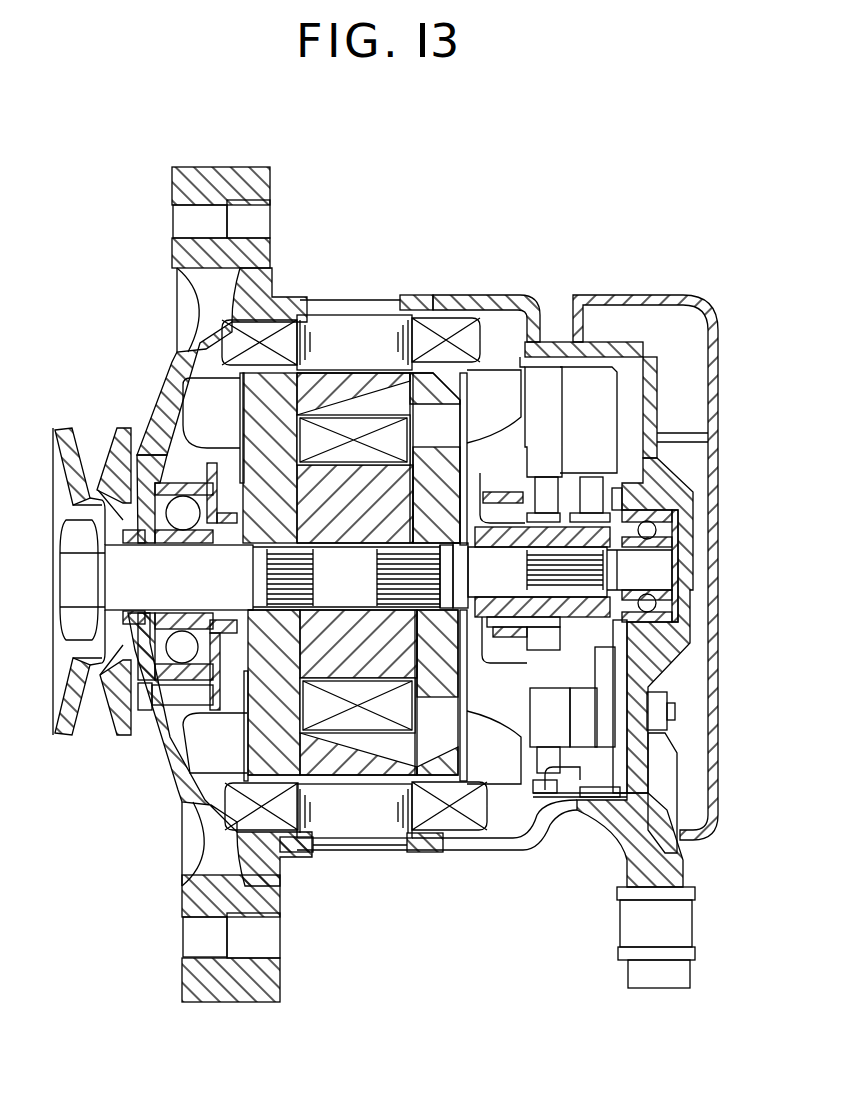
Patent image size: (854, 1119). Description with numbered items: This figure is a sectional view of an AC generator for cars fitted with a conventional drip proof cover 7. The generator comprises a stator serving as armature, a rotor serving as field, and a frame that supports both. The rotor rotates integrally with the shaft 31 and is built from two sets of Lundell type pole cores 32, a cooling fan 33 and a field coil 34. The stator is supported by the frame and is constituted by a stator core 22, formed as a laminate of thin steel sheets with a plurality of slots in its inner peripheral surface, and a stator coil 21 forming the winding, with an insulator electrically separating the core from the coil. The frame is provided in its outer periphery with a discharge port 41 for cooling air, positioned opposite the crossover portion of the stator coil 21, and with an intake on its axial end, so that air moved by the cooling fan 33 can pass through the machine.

The drip proof cover 7 is at (713, 550).
The stator coil 21 is at (468, 832).
The stator core 22 is at (330, 840).
The shaft 31 is at (135, 593).
The Lundell type pole cores 32 is at (330, 390).
The cooling fan 33 is at (205, 397).
The field coil 34 is at (353, 720).
The discharge port 41 is at (453, 302).